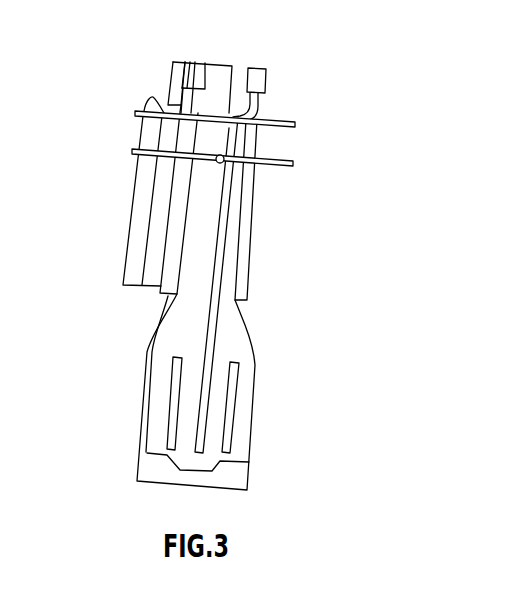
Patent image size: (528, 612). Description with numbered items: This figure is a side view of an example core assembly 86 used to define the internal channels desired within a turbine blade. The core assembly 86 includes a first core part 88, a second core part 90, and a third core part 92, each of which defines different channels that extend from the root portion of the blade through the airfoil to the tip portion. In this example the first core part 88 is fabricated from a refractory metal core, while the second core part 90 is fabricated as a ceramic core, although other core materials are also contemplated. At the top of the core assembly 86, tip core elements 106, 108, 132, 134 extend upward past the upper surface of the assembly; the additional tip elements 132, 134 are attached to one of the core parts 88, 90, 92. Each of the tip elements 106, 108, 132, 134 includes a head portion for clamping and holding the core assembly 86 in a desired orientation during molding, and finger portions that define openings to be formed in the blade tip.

The core assembly 86 is at (346, 163).
The first core part 88 is at (236, 383).
The second core part 90 is at (241, 306).
The third core part 92 is at (138, 274).
The tip core element 106 is at (325, 86).
The tip core element 108 is at (325, 86).
The tip element 132 is at (325, 86).
The tip element 134 is at (280, 117).